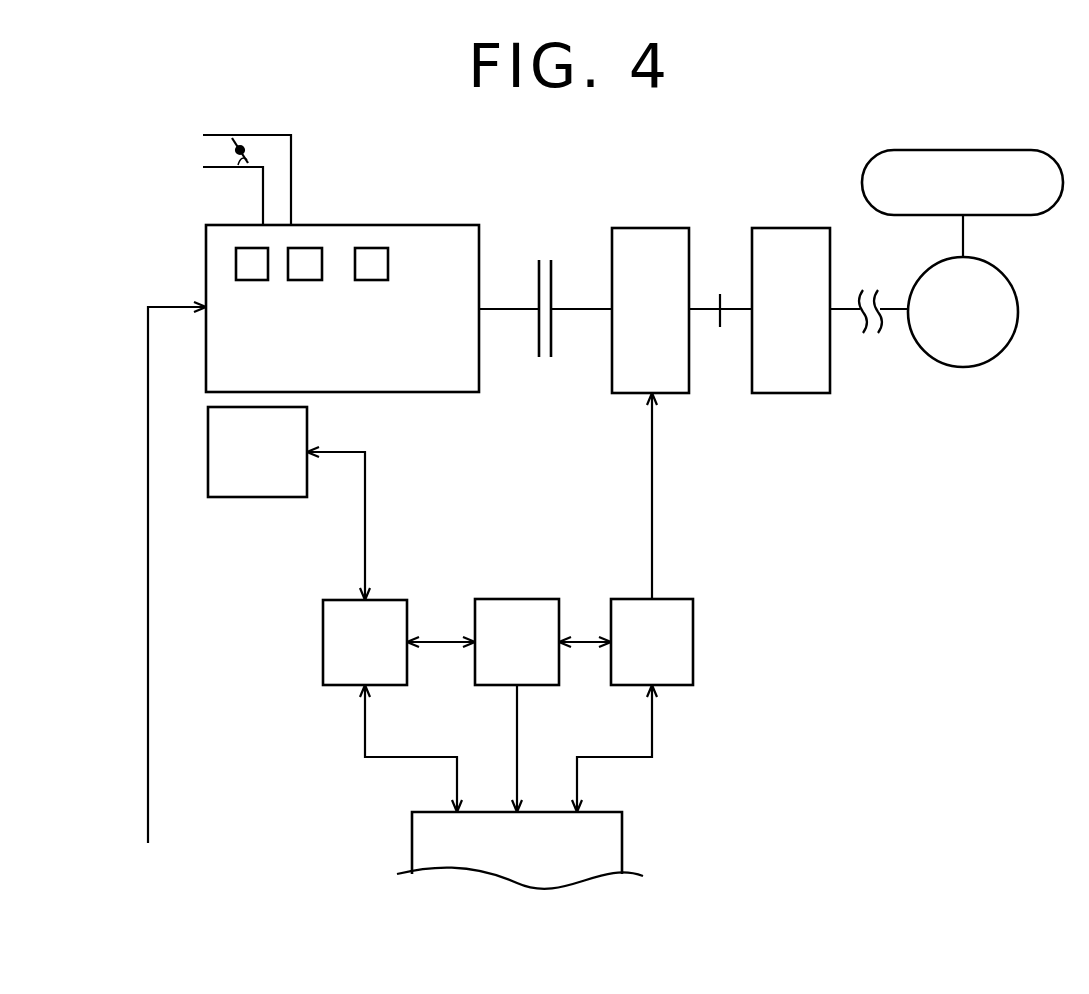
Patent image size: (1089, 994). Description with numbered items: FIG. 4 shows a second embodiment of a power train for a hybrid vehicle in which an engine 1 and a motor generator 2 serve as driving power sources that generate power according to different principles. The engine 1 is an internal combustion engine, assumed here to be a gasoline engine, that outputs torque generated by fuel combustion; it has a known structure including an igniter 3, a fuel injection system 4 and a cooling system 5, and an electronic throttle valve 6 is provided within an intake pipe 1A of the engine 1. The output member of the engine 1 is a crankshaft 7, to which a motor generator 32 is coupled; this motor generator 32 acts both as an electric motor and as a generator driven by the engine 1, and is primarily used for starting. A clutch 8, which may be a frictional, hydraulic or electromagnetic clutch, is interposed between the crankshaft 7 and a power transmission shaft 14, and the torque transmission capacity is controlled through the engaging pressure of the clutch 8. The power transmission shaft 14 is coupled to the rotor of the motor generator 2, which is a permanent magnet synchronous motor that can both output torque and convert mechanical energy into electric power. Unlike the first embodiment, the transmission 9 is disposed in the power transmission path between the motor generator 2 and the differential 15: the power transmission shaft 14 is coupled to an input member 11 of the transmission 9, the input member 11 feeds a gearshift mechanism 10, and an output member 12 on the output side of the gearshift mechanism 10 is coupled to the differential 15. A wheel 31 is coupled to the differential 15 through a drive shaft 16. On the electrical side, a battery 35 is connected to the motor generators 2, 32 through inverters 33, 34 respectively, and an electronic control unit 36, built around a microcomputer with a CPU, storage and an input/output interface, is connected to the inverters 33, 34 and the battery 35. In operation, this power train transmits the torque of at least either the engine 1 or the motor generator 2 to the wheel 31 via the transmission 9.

The engine 1 is at (350, 222).
The intake pipe 1A is at (219, 135).
The motor generator 2 is at (641, 395).
The igniter 3 is at (248, 268).
The fuel injection system 4 is at (302, 268).
The cooling system 5 is at (368, 268).
The electronic throttle valve 6 is at (233, 167).
The crankshaft 7 is at (513, 312).
The clutch 8 is at (537, 272).
The transmission 9 is at (751, 441).
The gearshift mechanism 10 is at (806, 395).
The input member 11 is at (736, 300).
The output member 12 is at (846, 306).
The power transmission shaft 14 is at (588, 312).
The differential 15 is at (958, 367).
The drive shaft 16 is at (965, 236).
The wheel 31 is at (958, 153).
The motor generator 32 is at (243, 485).
The inverter 33 is at (380, 610).
The inverter 34 is at (672, 623).
The battery 35 is at (517, 610).
The electronic control unit 36 is at (605, 838).